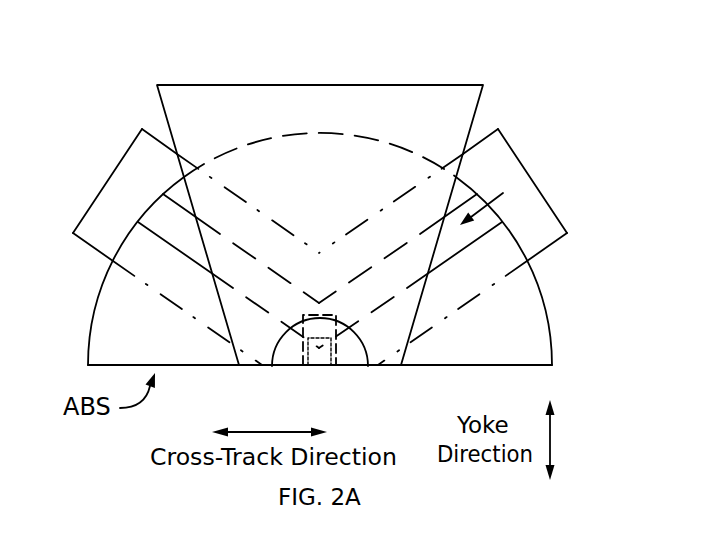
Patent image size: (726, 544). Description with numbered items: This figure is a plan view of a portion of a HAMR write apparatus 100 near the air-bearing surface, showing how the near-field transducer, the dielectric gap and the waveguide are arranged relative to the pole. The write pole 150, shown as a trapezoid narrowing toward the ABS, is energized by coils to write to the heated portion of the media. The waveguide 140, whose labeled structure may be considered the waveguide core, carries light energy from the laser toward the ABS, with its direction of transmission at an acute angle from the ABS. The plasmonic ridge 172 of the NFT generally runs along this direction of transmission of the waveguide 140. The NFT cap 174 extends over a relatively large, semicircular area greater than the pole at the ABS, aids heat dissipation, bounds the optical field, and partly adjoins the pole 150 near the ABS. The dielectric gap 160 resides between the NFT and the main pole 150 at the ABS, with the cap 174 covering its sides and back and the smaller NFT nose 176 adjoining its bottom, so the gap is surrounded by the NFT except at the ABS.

The HAMR write apparatus 100 is at (359, 48).
The waveguide 140 is at (538, 187).
The write pole 150 is at (320, 225).
The dielectric gap 160 is at (340, 347).
The plasmonic ridge 172 is at (465, 247).
The NFT cap 174 is at (552, 345).
The NFT nose 176 is at (272, 368).